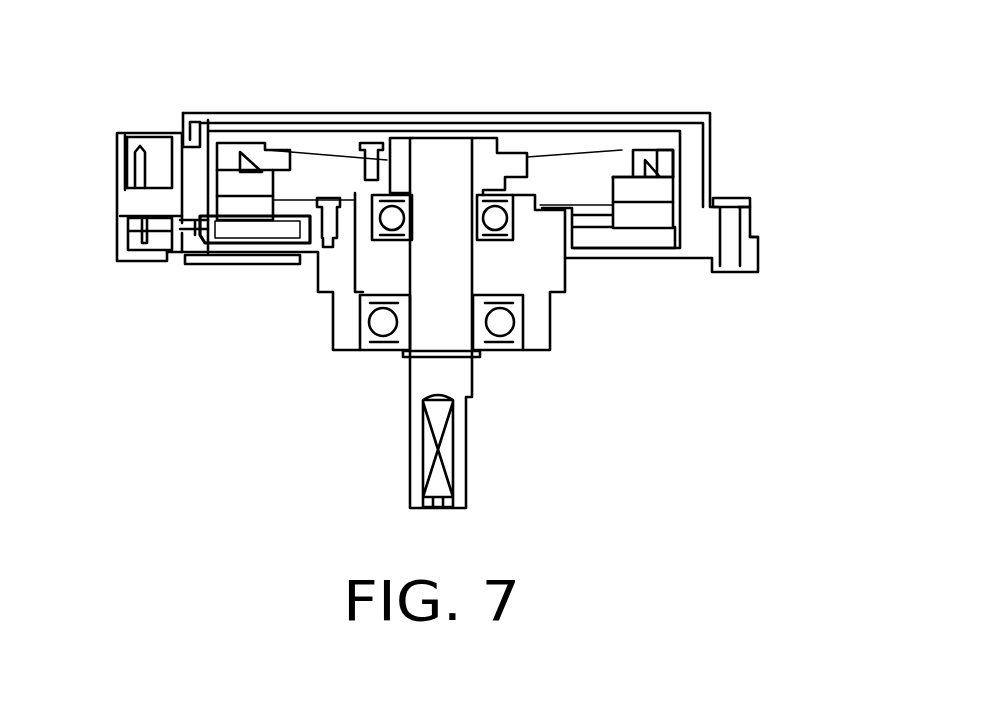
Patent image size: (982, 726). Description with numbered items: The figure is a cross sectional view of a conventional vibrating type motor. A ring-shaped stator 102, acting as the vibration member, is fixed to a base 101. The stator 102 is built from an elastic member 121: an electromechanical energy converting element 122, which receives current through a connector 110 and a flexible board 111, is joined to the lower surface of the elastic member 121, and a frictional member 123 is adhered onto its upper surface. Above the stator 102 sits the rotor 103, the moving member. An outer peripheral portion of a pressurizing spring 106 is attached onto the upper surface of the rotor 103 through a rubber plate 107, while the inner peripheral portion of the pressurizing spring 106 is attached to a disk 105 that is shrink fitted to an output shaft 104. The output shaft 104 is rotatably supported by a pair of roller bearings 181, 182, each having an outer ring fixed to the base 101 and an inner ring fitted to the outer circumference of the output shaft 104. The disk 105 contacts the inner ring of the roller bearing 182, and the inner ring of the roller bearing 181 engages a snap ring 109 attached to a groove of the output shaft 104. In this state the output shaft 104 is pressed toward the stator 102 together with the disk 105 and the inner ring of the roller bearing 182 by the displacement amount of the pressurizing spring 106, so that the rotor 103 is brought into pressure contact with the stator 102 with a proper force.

The base 101 is at (748, 258).
The stator 102 is at (837, 137).
The rotor 103 is at (664, 160).
The output shaft 104 is at (447, 152).
The disk 105 is at (402, 152).
The pressurizing spring 106 is at (332, 138).
The rubber plate 107 is at (272, 150).
The snap ring 109 is at (478, 356).
The connector 110 is at (130, 200).
The flexible board 111 is at (197, 262).
The elastic member 121 is at (660, 213).
The electromechanical energy converting element 122 is at (682, 232).
The frictional member 123 is at (660, 185).
The roller bearing 181 is at (378, 330).
The roller bearing 182 is at (380, 228).